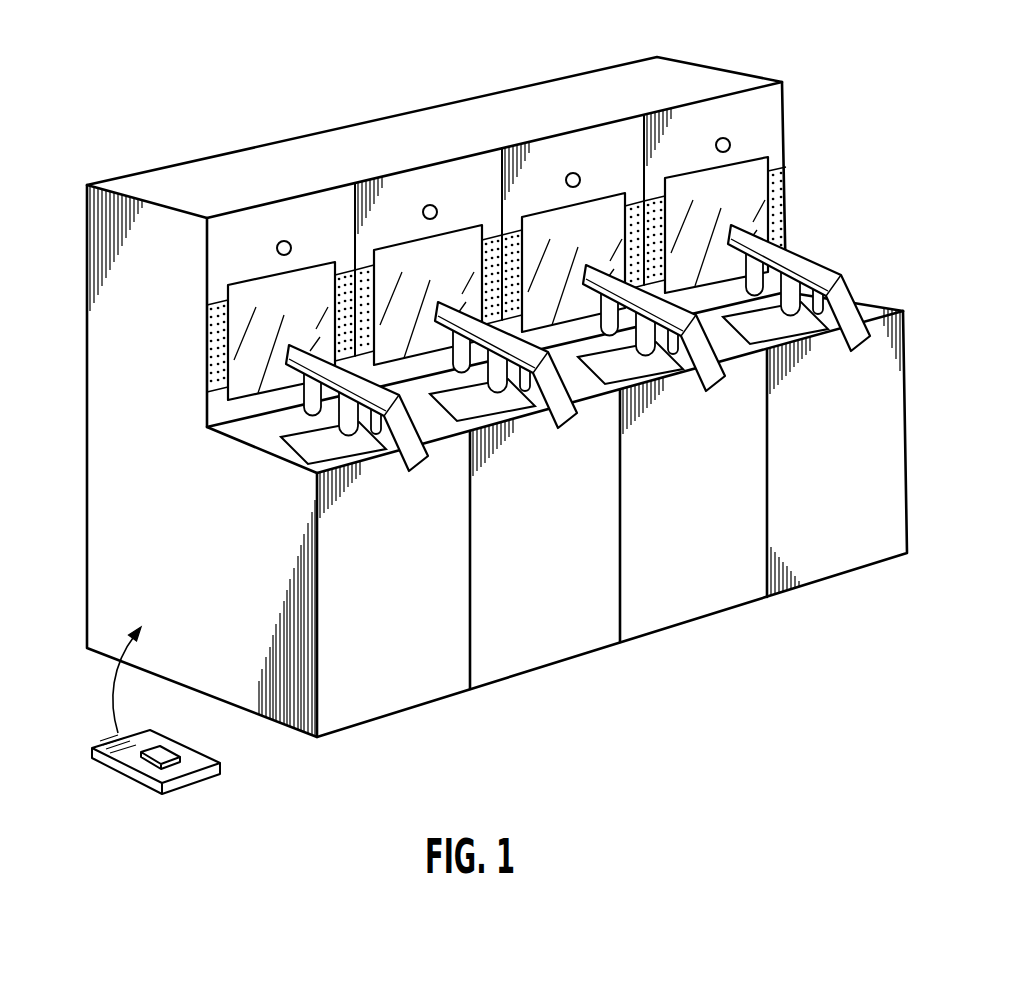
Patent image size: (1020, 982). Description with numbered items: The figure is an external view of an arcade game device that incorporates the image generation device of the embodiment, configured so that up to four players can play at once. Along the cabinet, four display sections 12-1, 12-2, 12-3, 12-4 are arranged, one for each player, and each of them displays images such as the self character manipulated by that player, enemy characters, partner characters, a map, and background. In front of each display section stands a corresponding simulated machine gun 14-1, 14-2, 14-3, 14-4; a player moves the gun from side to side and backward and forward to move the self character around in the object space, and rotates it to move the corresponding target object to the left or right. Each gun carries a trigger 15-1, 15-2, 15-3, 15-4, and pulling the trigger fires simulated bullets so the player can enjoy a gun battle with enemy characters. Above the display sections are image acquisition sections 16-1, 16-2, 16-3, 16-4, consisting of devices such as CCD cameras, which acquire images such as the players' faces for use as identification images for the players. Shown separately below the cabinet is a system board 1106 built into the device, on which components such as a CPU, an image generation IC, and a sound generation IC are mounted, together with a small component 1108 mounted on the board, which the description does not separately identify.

The display section 12-1 is at (253, 292).
The display section 12-2 is at (396, 262).
The display section 12-3 is at (541, 222).
The display section 12-4 is at (756, 182).
The image acquisition section 16-1 is at (285, 241).
The image acquisition section 16-2 is at (430, 205).
The image acquisition section 16-3 is at (573, 173).
The image acquisition section 16-4 is at (722, 138).
The simulated machine gun 14-1 is at (401, 472).
The simulated machine gun 14-2 is at (562, 430).
The simulated machine gun 14-3 is at (712, 392).
The simulated machine gun 14-4 is at (862, 344).
The trigger 15-1 is at (316, 472).
The trigger 15-2 is at (524, 384).
The trigger 15-3 is at (671, 345).
The trigger 15-4 is at (814, 308).
The system board 1106 is at (197, 773).
The chip on card 1108 is at (157, 748).